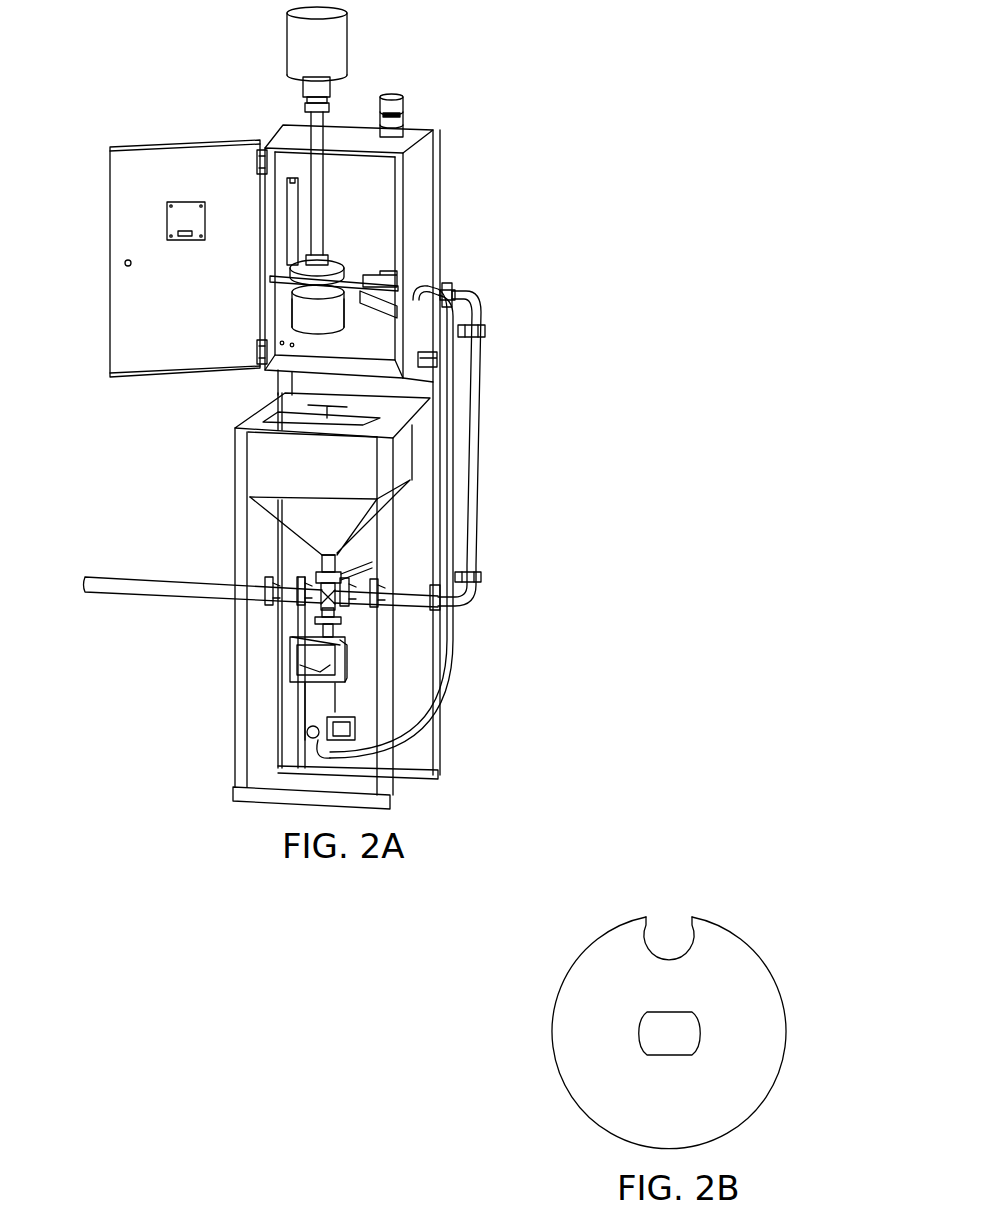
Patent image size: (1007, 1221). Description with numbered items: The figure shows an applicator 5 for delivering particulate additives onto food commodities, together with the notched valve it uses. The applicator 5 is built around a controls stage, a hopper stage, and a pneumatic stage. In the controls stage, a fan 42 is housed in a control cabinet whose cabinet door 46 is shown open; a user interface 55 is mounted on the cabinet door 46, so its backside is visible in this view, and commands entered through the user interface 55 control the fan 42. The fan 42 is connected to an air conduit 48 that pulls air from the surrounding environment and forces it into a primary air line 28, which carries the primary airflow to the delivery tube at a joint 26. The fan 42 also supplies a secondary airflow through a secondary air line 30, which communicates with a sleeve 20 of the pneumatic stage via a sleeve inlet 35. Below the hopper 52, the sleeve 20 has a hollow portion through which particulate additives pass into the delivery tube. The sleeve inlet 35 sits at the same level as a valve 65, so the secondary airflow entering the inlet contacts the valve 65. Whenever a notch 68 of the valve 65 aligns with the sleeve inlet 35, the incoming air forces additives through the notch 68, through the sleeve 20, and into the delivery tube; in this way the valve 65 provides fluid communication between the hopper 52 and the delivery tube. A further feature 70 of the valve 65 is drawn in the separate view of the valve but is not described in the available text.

In FIG. 2A, the applicator 5 is at (455, 85).
In FIG. 2A, the sleeve 20 is at (322, 558).
In FIG. 2A, the joint 26 is at (373, 607).
In FIG. 2A, the primary air line 28 is at (475, 415).
In FIG. 2A, the secondary air line 30 is at (448, 327).
In FIG. 2A, the sleeve inlet 35 is at (347, 572).
In FIG. 2A, the fan 42 is at (318, 320).
In FIG. 2A, the cabinet door 46 is at (185, 343).
In FIG. 2A, the air conduit 48 is at (318, 177).
In FIG. 2A, the hopper 52 is at (272, 468).
In FIG. 2A, the user interface 55 is at (187, 220).
In FIG. 2B, the valve 65 is at (790, 935).
In FIG. 2B, the notch 68 is at (670, 927).
In FIG. 2B, the slot 70 is at (673, 1030).